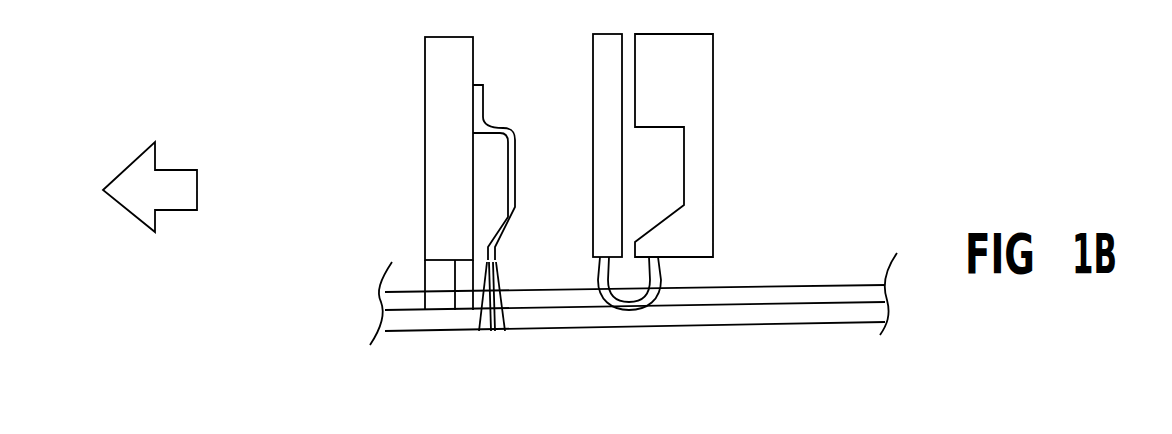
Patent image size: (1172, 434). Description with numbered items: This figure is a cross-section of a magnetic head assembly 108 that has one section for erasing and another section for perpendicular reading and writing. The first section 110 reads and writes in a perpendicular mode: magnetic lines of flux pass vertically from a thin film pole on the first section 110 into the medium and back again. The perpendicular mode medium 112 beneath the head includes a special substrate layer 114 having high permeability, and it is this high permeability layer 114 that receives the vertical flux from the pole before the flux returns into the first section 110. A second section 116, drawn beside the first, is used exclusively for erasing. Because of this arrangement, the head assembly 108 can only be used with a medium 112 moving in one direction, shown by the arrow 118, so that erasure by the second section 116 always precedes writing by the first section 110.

The magnetic head assembly 108 is at (695, 98).
The first section 110 is at (465, 110).
The perpendicular mode medium 112 is at (407, 292).
The substrate layer 114 is at (460, 320).
The second section 116 is at (713, 173).
The arrow 118 is at (175, 165).